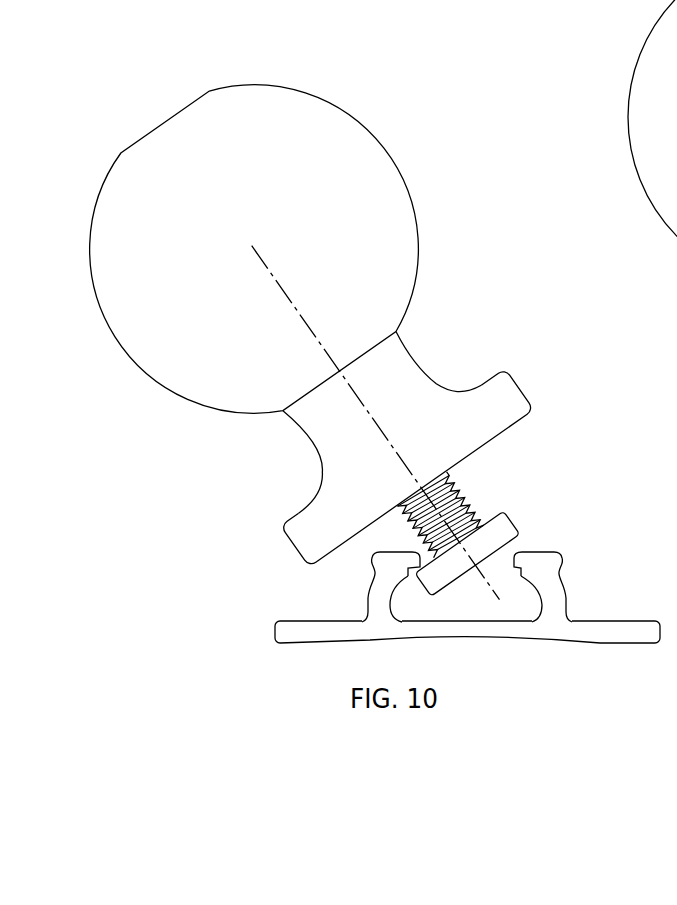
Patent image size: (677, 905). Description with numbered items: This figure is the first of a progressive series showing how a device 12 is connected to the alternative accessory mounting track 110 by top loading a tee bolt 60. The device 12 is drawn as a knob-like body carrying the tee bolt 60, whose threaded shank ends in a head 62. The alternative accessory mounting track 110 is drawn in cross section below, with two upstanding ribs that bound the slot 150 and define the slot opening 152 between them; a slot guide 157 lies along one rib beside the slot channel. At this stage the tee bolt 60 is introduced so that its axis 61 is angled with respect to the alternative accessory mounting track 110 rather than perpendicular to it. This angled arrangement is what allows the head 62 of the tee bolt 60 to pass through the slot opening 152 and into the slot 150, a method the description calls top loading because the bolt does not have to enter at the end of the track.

The device 12 is at (177, 197).
The axis 61 is at (263, 258).
The tee bolt 60 is at (483, 475).
The head 62 is at (500, 528).
The alternative accessory mounting track 110 is at (315, 610).
The slot 150 is at (522, 602).
The slot opening 152 is at (507, 560).
The slot guide 157 is at (407, 571).